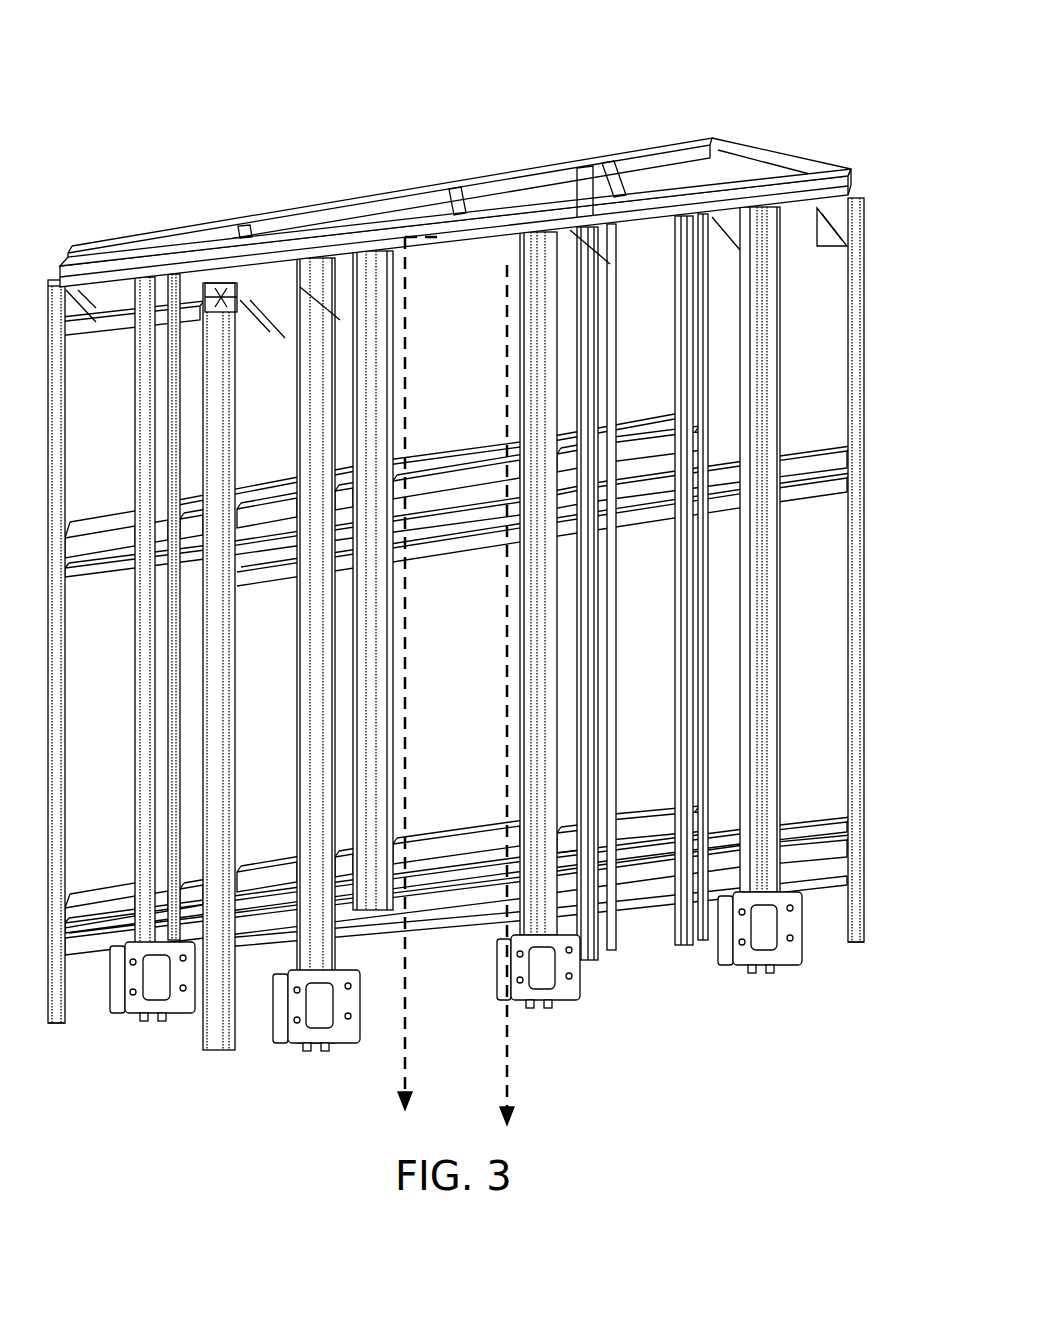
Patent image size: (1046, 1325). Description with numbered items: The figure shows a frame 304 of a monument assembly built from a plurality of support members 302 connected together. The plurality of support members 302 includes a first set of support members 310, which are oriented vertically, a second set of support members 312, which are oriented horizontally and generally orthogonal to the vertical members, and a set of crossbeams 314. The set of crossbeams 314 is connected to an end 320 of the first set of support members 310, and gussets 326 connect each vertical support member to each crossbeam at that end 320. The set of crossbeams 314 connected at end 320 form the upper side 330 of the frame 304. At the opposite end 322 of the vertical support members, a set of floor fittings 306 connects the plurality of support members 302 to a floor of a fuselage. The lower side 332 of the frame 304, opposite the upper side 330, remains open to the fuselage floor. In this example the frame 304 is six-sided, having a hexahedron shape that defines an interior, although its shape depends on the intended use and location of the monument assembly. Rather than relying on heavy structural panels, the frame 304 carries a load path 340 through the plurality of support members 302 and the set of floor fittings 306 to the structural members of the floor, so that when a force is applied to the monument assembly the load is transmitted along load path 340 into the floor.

The plurality of support members 302 is at (306, 72).
The frame 304 is at (862, 353).
The set of floor fittings 306 is at (115, 1020).
The first set of support members 310 is at (577, 655).
The second set of support members 312 is at (650, 240).
The set of crossbeams 314 is at (243, 242).
The end 320 is at (872, 178).
The end 322 is at (866, 978).
The gussets 326 is at (283, 238).
The upper side 330 is at (788, 126).
The lower side 332 is at (165, 1078).
The load path 340 is at (510, 1068).